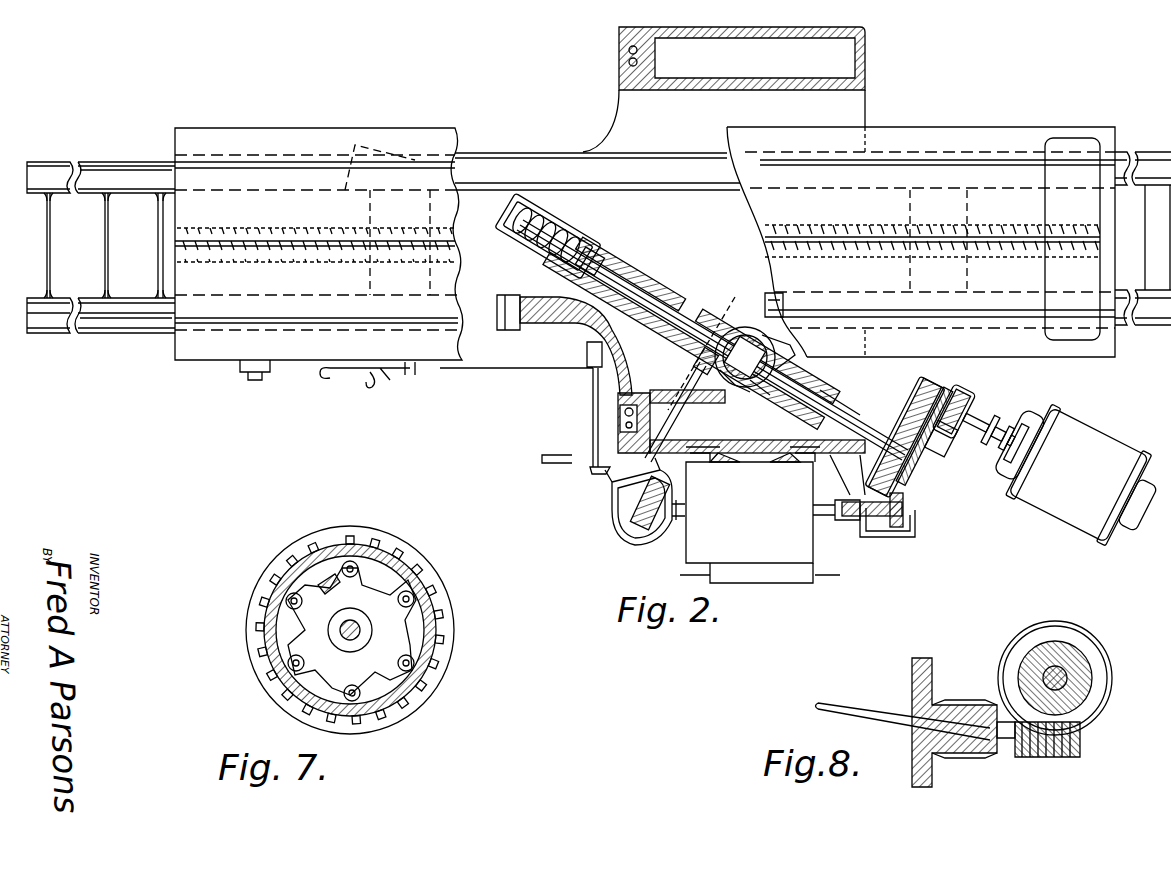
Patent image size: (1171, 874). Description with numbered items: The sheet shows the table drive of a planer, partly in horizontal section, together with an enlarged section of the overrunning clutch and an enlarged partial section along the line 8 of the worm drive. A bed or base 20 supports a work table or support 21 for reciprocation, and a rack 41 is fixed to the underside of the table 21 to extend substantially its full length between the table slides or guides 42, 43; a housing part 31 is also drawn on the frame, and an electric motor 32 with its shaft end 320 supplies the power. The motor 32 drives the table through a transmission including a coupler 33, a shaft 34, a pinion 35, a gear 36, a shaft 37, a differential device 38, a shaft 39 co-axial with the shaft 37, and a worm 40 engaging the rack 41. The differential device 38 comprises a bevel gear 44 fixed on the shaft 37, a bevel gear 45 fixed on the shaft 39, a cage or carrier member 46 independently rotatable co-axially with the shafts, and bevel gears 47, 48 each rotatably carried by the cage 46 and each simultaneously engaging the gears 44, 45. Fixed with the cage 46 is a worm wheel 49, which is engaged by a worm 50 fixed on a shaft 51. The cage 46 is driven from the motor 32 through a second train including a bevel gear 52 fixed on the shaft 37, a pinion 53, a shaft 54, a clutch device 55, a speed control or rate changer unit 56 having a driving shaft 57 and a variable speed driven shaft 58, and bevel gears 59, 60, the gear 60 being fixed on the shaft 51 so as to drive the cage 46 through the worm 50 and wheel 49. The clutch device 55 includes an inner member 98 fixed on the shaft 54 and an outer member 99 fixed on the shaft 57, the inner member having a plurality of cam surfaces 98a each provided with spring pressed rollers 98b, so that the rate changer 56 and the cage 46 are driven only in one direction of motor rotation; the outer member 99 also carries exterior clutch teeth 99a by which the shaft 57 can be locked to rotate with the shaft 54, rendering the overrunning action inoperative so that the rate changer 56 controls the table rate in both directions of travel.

In FIG. 2, the bed or base 20 is at (138, 322).
In FIG. 2, the work table or support 21 is at (196, 365).
In FIG. 2, the bracket 31 is at (863, 40).
In FIG. 2, the electric motor 32 is at (1108, 448).
In FIG. 2, the motor shaft coupling 320 is at (1025, 412).
In FIG. 2, the coupler 33 is at (1000, 412).
In FIG. 2, the shaft 34 is at (975, 406).
In FIG. 2, the pinion 35 is at (943, 392).
In FIG. 2, the gear 36 is at (915, 400).
In FIG. 2, the shaft 37 is at (815, 400).
In FIG. 2, the differential device 38 is at (790, 356).
In FIG. 2, the shaft 39 is at (598, 275).
In FIG. 8, the shaft 39 is at (1070, 672).
In FIG. 2, the worm 40 is at (560, 232).
In FIG. 2, the rack 41 is at (350, 222).
In FIG. 2, the table slide or guide 42 is at (122, 310).
In FIG. 2, the table slide or guide 43 is at (141, 178).
In FIG. 2, the bevel gear 44 is at (762, 387).
In FIG. 2, the bevel gear 45 is at (700, 362).
In FIG. 2, the cage or carrier member 46 is at (742, 388).
In FIG. 2, the bevel gear 47 is at (777, 327).
In FIG. 2, the bevel gear 48 is at (728, 378).
In FIG. 2, the worm wheel 49 is at (735, 330).
In FIG. 8, the worm wheel 49 is at (1070, 640).
In FIG. 8, the worm 50 is at (1060, 755).
In FIG. 2, the shaft 51 is at (668, 400).
In FIG. 8, the shaft 51 is at (875, 705).
In FIG. 2, the bevel gear 52 is at (935, 495).
In FIG. 2, the pinion 53 is at (905, 530).
In FIG. 2, the shaft 54 is at (860, 520).
In FIG. 2, the clutch device 55 is at (835, 495).
In FIG. 2, the speed control or rate changer unit 56 is at (760, 515).
In FIG. 2, the driving shaft 57 is at (810, 512).
In FIG. 2, the variable speed driven shaft 58 is at (672, 510).
In FIG. 2, the bevel gear 59 is at (640, 535).
In FIG. 2, the bevel gear 60 is at (612, 495).
In FIG. 2, the section line 8- 8 is at (737, 289).
In FIG. 7, the inner clutch member 98 is at (405, 632).
In FIG. 7, the cam surfaces 98a is at (345, 692).
In FIG. 7, the spring pressed rollers 98b is at (360, 700).
In FIG. 7, the outer clutch member 99 is at (428, 580).
In FIG. 7, the exterior clutch teeth 99a is at (375, 545).